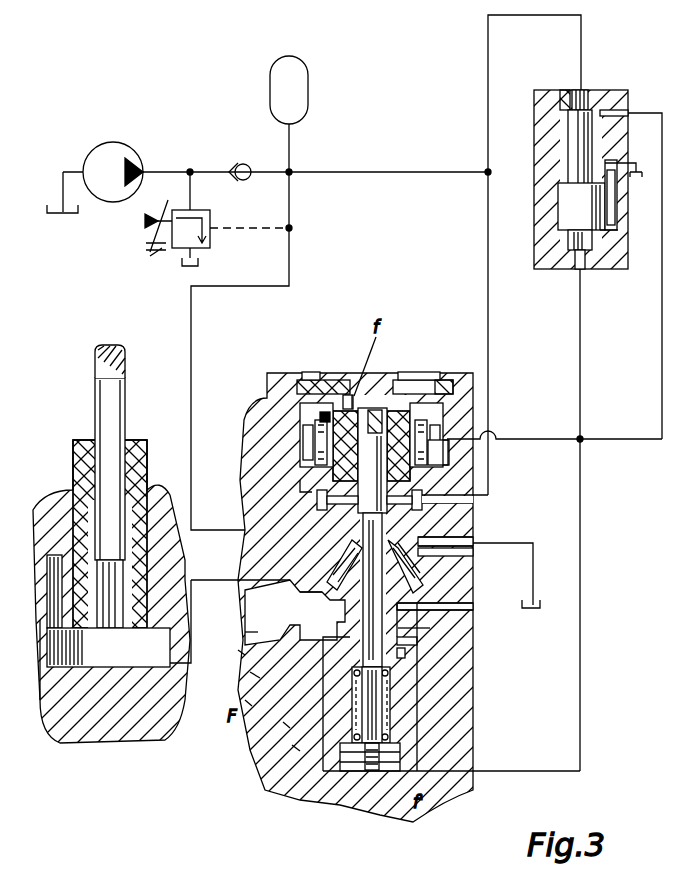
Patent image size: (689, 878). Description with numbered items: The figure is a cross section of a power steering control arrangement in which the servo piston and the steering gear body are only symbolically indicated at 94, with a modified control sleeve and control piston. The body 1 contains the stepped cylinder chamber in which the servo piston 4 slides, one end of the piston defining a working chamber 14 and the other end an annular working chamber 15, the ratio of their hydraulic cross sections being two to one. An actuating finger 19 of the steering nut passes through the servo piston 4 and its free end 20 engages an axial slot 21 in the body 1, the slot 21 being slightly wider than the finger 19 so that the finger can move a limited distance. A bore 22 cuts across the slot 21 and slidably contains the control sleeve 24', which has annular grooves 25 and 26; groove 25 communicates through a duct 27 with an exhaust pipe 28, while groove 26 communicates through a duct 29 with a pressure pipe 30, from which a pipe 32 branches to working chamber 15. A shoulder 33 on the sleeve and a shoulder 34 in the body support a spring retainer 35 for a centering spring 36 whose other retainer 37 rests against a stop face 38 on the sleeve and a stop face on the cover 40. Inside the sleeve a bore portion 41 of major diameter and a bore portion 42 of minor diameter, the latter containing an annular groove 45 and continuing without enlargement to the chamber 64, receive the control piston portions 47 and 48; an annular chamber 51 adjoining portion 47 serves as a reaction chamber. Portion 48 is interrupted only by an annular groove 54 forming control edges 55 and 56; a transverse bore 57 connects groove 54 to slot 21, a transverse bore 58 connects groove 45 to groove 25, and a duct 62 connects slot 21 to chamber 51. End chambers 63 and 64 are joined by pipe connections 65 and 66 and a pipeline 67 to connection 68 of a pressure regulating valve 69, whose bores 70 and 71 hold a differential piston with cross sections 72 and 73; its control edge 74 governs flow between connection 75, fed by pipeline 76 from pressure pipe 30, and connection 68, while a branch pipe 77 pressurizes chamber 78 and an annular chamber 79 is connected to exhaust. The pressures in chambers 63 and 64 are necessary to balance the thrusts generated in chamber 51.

The body 1 is at (297, 437).
The servo piston 4 is at (57, 612).
The working chamber 14 is at (128, 655).
The working chamber 15 is at (158, 525).
The actuating finger 19 is at (255, 633).
The free end 20 is at (255, 675).
The axial slot 21 is at (247, 703).
The bore 22 is at (295, 748).
The control sleeve 24' is at (243, 734).
The annular groove 25 is at (290, 583).
The annular groove 26 is at (318, 500).
The duct 27 is at (478, 537).
The exhaust pipe 28 is at (533, 582).
The duct 29 is at (425, 502).
The pressure pipe 30 is at (373, 172).
The pipe 32 is at (191, 400).
The shoulder 33 is at (410, 480).
The shoulder 34 is at (307, 485).
The spring retainer 35 is at (420, 468).
The centering spring 36 is at (313, 463).
The spring retainer 37 is at (322, 420).
The stop face 38 is at (313, 372).
The cover 40 is at (382, 373).
The bore portion 41 is at (397, 687).
The bore portion 42 is at (380, 607).
The annular groove 45 is at (238, 652).
The control piston portion 47 is at (397, 703).
The control piston portion 48 is at (405, 638).
The annular chamber 51 is at (400, 650).
The annular groove 54 is at (340, 548).
The control edge 55 is at (370, 590).
The control edge 56 is at (372, 460).
The transverse bore 57 is at (300, 600).
The transverse bore 58 is at (413, 550).
The duct 62 is at (430, 632).
The chamber 63 is at (350, 775).
The chamber 64 is at (347, 396).
The pipe connection 65 is at (527, 771).
The pipe connection 66 is at (512, 439).
The pipeline 67 is at (662, 385).
The connection 68 is at (612, 113).
The pressure regulating valve 69 is at (527, 165).
The bore 70 is at (566, 125).
The bore 71 is at (558, 208).
The differential piston cross section 72 is at (585, 118).
The differential piston cross section 73 is at (605, 235).
The control edge 74 is at (578, 100).
The connection 75 is at (560, 95).
The pipeline 76 is at (488, 40).
The branch pipe 77 is at (580, 297).
The chamber 78 is at (545, 267).
The annular chamber 79 is at (614, 176).
The servo piston and body 94 is at (50, 492).